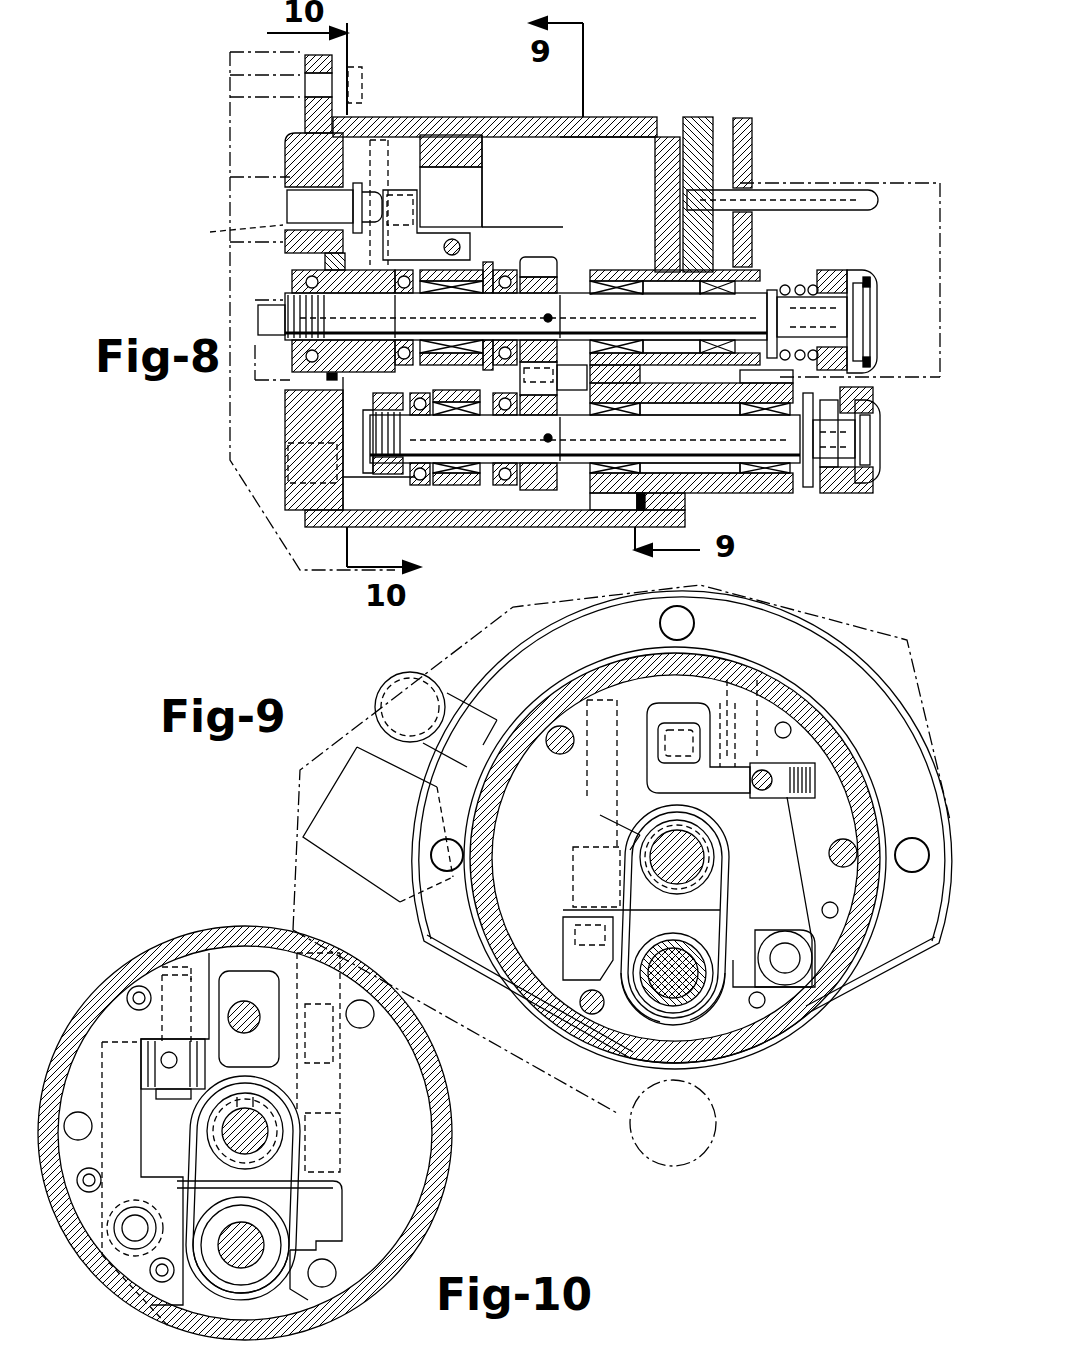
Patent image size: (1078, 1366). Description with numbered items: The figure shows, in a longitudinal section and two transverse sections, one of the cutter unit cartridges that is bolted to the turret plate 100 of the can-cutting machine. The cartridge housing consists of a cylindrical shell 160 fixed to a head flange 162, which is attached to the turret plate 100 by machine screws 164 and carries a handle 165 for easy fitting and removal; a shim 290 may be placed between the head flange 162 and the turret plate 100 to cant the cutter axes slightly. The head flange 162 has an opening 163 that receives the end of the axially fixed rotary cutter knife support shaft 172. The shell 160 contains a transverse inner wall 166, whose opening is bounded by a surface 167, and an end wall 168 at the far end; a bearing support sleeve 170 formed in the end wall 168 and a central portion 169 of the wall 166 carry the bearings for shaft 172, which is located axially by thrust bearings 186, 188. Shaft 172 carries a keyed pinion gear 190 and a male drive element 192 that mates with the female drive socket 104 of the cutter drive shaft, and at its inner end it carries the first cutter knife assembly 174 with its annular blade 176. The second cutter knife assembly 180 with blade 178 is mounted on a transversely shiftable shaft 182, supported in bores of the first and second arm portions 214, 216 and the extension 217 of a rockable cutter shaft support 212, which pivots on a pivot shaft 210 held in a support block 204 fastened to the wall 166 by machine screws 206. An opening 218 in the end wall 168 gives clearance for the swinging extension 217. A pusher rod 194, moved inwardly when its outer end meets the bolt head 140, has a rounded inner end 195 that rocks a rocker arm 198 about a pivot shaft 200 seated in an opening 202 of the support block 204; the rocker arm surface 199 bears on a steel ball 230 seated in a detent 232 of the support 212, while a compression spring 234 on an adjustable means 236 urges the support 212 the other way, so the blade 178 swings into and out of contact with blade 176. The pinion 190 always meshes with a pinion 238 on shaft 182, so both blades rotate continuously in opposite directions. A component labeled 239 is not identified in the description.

In FIG. 8, the turret plate 100 is at (238, 52).
In FIG. 8, the female drive socket 104 is at (265, 371).
In FIG. 8, the bolt head 140 is at (231, 229).
In FIG. 8, the cylindrical shell 160 is at (548, 117).
In FIG. 9, the cylindrical shell 160 is at (798, 700).
In FIG. 10, the cylindrical shell 160 is at (452, 1108).
In FIG. 8, the head flange 162 is at (285, 148).
In FIG. 9, the head flange 162 is at (500, 672).
In FIG. 8, the opening 163 is at (290, 260).
In FIG. 8, the machine screws 164 is at (368, 75).
In FIG. 9, the machine screws 164 is at (698, 622).
In FIG. 9, the handle 165 is at (388, 690).
In FIG. 8, the transverse inner wall 166 is at (482, 152).
In FIG. 9, the transverse inner wall 166 is at (643, 765).
In FIG. 10, the transverse inner wall 166 is at (284, 1033).
In FIG. 8, the surface 167 is at (482, 195).
In FIG. 9, the surface 167 is at (675, 707).
In FIG. 10, the surface 167 is at (268, 975).
In FIG. 8, the end wall 168 is at (656, 160).
In FIG. 8, the central portion 169 is at (470, 265).
In FIG. 9, the central portion 169 is at (720, 885).
In FIG. 10, the central portion 169 is at (243, 1188).
In FIG. 8, the bearing support sleeve 170 is at (625, 255).
In FIG. 8, the axially fixed rotary cutter knife support shaft 172 is at (625, 305).
In FIG. 9, the axially fixed rotary cutter knife support shaft 172 is at (650, 862).
In FIG. 10, the axially fixed rotary cutter knife support shaft 172 is at (228, 1135).
In FIG. 8, the first cutter knife assembly 174 is at (860, 268).
In FIG. 8, the annular blade 176 is at (830, 267).
In FIG. 8, the blade 178 is at (845, 497).
In FIG. 8, the second cutter knife assembly 180 is at (885, 471).
In FIG. 8, the transversely shiftable cutter knife support shaft 182 is at (585, 436).
In FIG. 9, the transversely shiftable cutter knife support shaft 182 is at (725, 1015).
In FIG. 10, the transversely shiftable cutter knife support shaft 182 is at (255, 1243).
In FIG. 8, the thrust bearing 186 is at (425, 340).
In FIG. 8, the thrust bearing 188 is at (498, 340).
In FIG. 8, the pinion gear 190 is at (545, 260).
In FIG. 9, the pinion gear 190 is at (615, 820).
In FIG. 8, the male drive element 192 is at (258, 318).
In FIG. 8, the pusher rod 194 is at (334, 208).
In FIG. 10, the pusher rod 194 is at (220, 968).
In FIG. 8, the inner end 195 is at (385, 205).
In FIG. 9, the inner end 195 is at (690, 722).
In FIG. 8, the rocker arm 198 is at (403, 217).
In FIG. 9, the rocker arm 198 is at (705, 749).
In FIG. 9, the surface 199 is at (748, 768).
In FIG. 8, the pivot shaft 200 is at (412, 140).
In FIG. 10, the opening 202 is at (150, 953).
In FIG. 8, the support block 204 is at (380, 130).
In FIG. 10, the support block 204 is at (88, 1012).
In FIG. 10, the machine screws 206 is at (127, 990).
In FIG. 8, the pivot shaft 210 is at (385, 475).
In FIG. 9, the pivot shaft 210 is at (790, 960).
In FIG. 10, the pivot shaft 210 is at (122, 1240).
In FIG. 9, the rockable cutter shaft support 212 is at (790, 848).
In FIG. 10, the rockable cutter shaft support 212 is at (345, 1215).
In FIG. 8, the first arm portion 214 is at (465, 500).
In FIG. 8, the second arm portion 216 is at (595, 510).
In FIG. 9, the second arm portion 216 is at (563, 930).
In FIG. 10, the second arm portion 216 is at (322, 1246).
In FIG. 8, the extension 217 is at (745, 488).
In FIG. 9, the extension 217 is at (690, 1020).
In FIG. 8, the opening 218 is at (718, 404).
In FIG. 8, the steel ball 230 is at (470, 247).
In FIG. 9, the detent 232 is at (770, 775).
In FIG. 9, the compression spring 234 is at (580, 905).
In FIG. 10, the compression spring 234 is at (342, 1186).
In FIG. 9, the adjustable means 236 is at (580, 850).
In FIG. 10, the adjustable means 236 is at (340, 1140).
In FIG. 8, the pinion 238 is at (540, 495).
In FIG. 9, the pinion 238 is at (640, 1040).
In FIG. 8, the wall 239 is at (700, 118).
In FIG. 9, the shim 290 is at (345, 775).